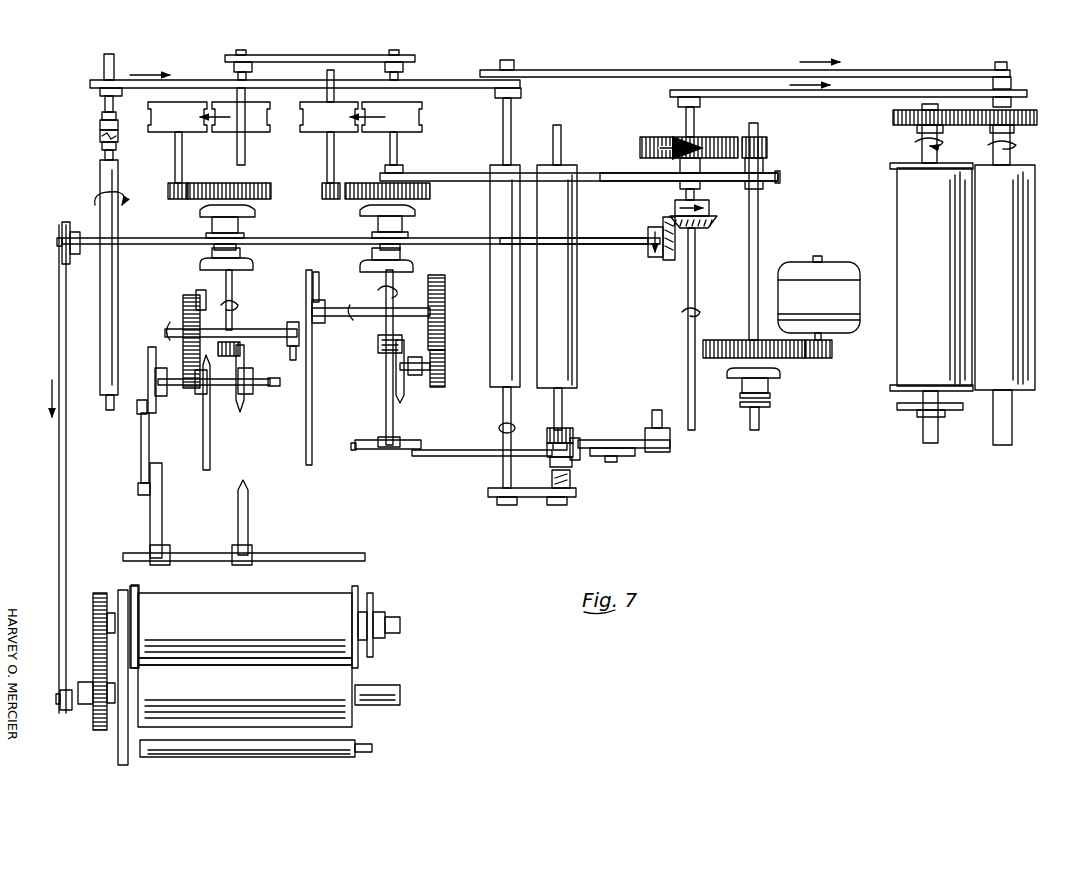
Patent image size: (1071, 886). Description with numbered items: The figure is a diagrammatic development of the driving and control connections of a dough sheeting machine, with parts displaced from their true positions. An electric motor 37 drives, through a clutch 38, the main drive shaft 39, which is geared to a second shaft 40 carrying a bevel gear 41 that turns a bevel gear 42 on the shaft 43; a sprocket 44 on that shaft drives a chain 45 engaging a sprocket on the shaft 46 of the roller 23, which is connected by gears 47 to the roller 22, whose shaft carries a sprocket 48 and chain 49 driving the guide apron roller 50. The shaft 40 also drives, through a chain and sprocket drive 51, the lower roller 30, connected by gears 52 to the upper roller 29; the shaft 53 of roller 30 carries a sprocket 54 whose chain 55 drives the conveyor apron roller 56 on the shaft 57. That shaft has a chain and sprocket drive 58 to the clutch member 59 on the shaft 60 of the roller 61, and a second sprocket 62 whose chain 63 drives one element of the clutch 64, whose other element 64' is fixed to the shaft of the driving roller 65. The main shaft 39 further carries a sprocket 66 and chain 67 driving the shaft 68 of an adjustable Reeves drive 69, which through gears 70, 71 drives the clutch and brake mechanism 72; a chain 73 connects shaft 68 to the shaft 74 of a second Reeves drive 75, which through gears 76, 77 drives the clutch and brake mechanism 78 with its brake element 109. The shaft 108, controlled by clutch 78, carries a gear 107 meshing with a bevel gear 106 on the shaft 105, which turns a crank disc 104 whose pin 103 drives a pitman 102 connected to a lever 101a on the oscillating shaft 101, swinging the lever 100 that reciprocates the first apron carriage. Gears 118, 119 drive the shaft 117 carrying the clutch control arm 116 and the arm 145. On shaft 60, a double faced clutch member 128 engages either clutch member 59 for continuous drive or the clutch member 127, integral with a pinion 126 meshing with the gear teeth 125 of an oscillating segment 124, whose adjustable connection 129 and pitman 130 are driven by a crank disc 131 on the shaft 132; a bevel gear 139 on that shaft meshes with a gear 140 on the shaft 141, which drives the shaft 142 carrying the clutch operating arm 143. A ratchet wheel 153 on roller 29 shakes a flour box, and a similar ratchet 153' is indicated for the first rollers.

The roller 22 is at (283, 600).
The roller 23 is at (345, 718).
The upper roller 29 is at (906, 188).
The lower roller 30 is at (1020, 188).
The electric motor 37 is at (828, 262).
The clutch 38 is at (772, 380).
The main drive shaft 39 is at (758, 254).
The second shaft 40 is at (692, 125).
The bevel gear 41 is at (704, 226).
The bevel gear 42 is at (667, 260).
The shaft 43 is at (592, 243).
The sprocket 44 is at (60, 232).
The chain 45 is at (58, 340).
The shaft 46 is at (85, 705).
The gears 47 is at (100, 580).
The sprocket 48 is at (118, 592).
The chain 49 is at (118, 740).
The roller 50 is at (197, 757).
The chain and sprocket drive 51 is at (800, 97).
The gears 52 is at (945, 125).
The shaft 53 is at (1012, 158).
The sprocket 54 is at (1006, 70).
The chain 55 is at (742, 70).
The roller 56 is at (508, 172).
The shaft 57 is at (503, 468).
The chain and sprocket drive 58 is at (525, 497).
The clutch member 59 is at (572, 480).
The shaft 60 is at (563, 405).
The roller 61 is at (566, 350).
The second sprocket 62 is at (520, 90).
The chain 63 is at (420, 80).
The clutch 64 is at (85, 113).
The clutch element 64' is at (83, 141).
The driving roller 65 is at (100, 168).
The sprocket 66 is at (777, 181).
The chain 67 is at (610, 172).
The shaft 68 is at (398, 148).
The adjustable Reeves drive 69 is at (422, 118).
The gear 70 is at (328, 199).
The gear 71 is at (362, 199).
The combination clutch and brake mechanism 72 is at (410, 212).
The chain 73 is at (320, 56).
The shaft 74 is at (245, 147).
The second adjustable Reeves drive 75 is at (192, 125).
The gear 76 is at (172, 199).
The gear 77 is at (206, 199).
The clutch and brake mechanism 78 is at (250, 210).
The oscillating lever 100 is at (248, 520).
The oscillating shaft 101 is at (300, 553).
The lever 101a is at (160, 522).
The pitman 102 is at (141, 438).
The pin 103 is at (138, 412).
The crank disc 104 is at (148, 350).
The shaft 105 is at (207, 400).
The bevel gear 106 is at (242, 404).
The gear 107 is at (232, 350).
The shaft 108 is at (232, 293).
The brake element 109 is at (200, 264).
The clutch control arm 116 is at (199, 292).
The shaft 117 is at (243, 333).
The gear 118 is at (183, 305).
The gear 119 is at (180, 390).
The oscillating segment 124 is at (603, 440).
The gear teeth 125 is at (577, 438).
The pinion 126 is at (548, 432).
The clutch member 127 is at (548, 446).
The double faced clutch member 128 is at (572, 462).
The adjustable connection 129 is at (615, 450).
The pitman 130 is at (432, 450).
The crank disc 131 is at (360, 450).
The shaft 132 is at (393, 428).
The bevel gear 139 is at (378, 348).
The gear 140 is at (402, 352).
The shaft 141 is at (418, 385).
The shaft 142 is at (392, 308).
The clutch operating arm 143 is at (318, 293).
The arm 145 is at (287, 360).
The ratchet wheel 153 is at (936, 417).
The ratchet 153' is at (390, 621).